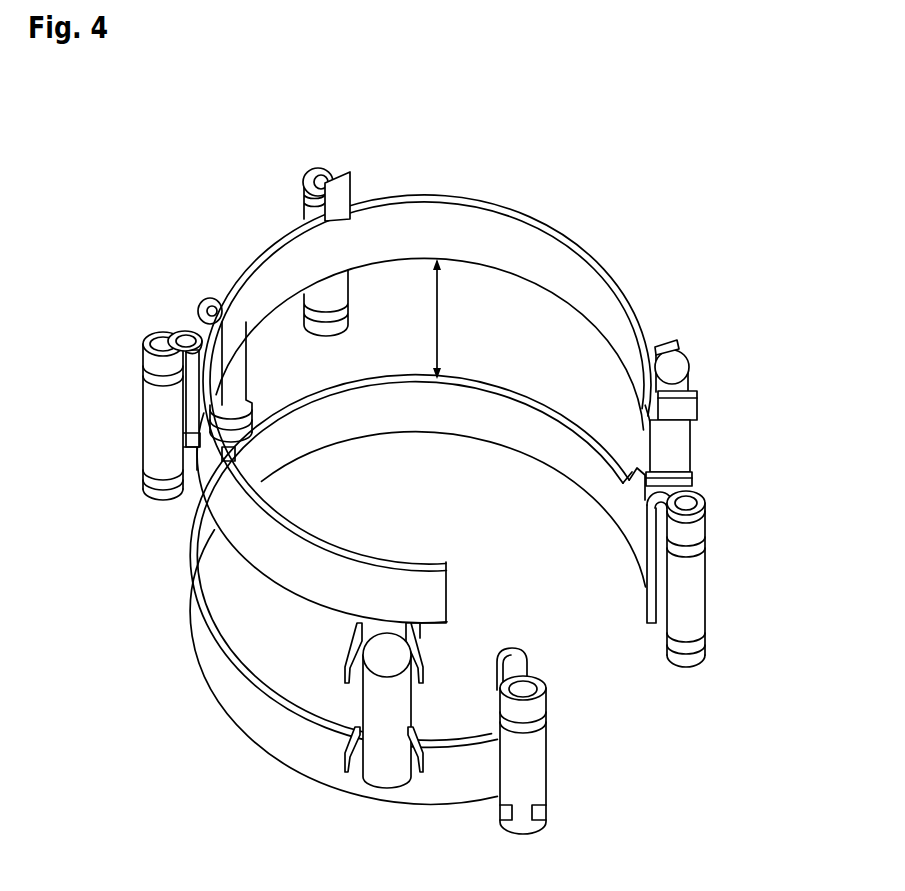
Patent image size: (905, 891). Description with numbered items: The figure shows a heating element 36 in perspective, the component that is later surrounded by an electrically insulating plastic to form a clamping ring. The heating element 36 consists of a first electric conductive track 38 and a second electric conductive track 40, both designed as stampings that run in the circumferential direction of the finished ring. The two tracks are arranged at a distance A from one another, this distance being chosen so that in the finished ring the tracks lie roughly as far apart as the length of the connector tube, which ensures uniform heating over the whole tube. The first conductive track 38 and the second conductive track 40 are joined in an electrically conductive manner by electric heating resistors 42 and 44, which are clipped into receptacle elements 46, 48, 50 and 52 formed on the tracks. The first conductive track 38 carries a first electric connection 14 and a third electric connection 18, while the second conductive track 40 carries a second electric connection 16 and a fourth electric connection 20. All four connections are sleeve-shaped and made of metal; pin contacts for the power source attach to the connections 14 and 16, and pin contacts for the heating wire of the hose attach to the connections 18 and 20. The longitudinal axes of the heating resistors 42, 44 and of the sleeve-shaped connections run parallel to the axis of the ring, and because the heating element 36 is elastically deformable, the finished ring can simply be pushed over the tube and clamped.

The first electric connection 14 is at (548, 748).
The second electric connection 16 is at (152, 441).
The third electric connection 18 is at (690, 575).
The fourth electric connection 20 is at (326, 166).
The heating element 36 is at (137, 727).
The first electric conductive track 38 is at (267, 717).
The second electric conductive track 40 is at (300, 567).
The electric heating resistor 42 is at (672, 366).
The electric heating resistor 44 is at (388, 717).
The receptacle element 46 is at (424, 764).
The receptacle element 48 is at (428, 663).
The receptacle element 50 is at (678, 484).
The receptacle element 52 is at (688, 407).
The distance A is at (440, 324).